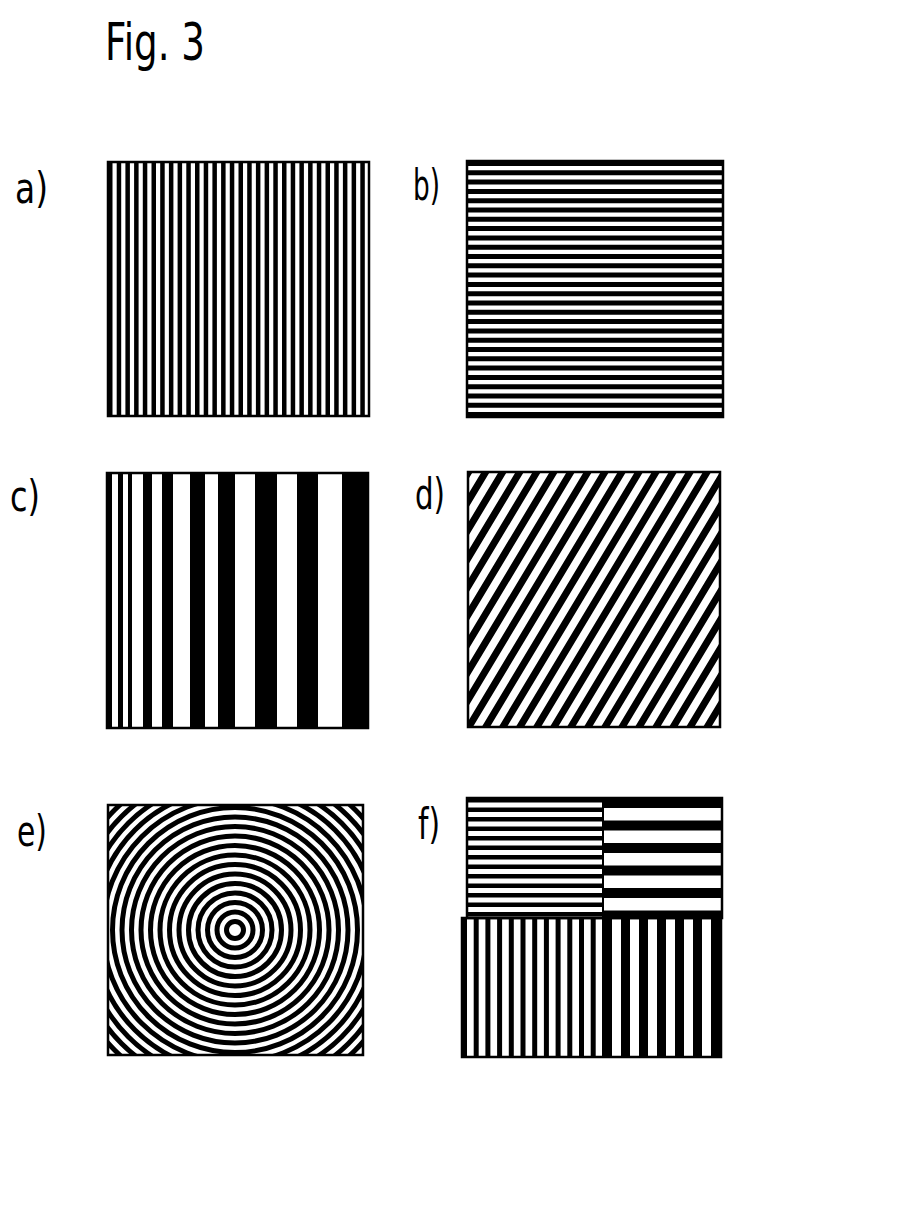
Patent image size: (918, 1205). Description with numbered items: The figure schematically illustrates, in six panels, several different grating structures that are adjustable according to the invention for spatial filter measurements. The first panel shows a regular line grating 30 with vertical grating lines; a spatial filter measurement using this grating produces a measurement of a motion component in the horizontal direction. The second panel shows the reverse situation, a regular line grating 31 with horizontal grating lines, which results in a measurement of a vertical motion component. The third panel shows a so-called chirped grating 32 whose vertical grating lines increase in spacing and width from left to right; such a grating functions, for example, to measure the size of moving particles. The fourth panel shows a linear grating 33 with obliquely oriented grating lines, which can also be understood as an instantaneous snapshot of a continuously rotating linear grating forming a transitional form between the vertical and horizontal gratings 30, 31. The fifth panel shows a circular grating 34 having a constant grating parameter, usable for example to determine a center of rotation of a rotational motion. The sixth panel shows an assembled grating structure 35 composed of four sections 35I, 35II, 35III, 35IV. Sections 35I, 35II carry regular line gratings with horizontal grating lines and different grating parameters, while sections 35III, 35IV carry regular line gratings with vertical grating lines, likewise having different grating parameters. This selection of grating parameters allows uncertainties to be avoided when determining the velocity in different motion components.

The regular line grating 30 is at (108, 265).
The regular line grating 31 is at (653, 160).
The chirped grating 32 is at (107, 555).
The linear grating 33 is at (720, 520).
The circular grating 34 is at (108, 958).
The assembled grating structure 35 is at (605, 978).
The section 35I is at (467, 888).
The section 35II is at (722, 849).
The section 35III is at (535, 1058).
The section 35IV is at (722, 953).